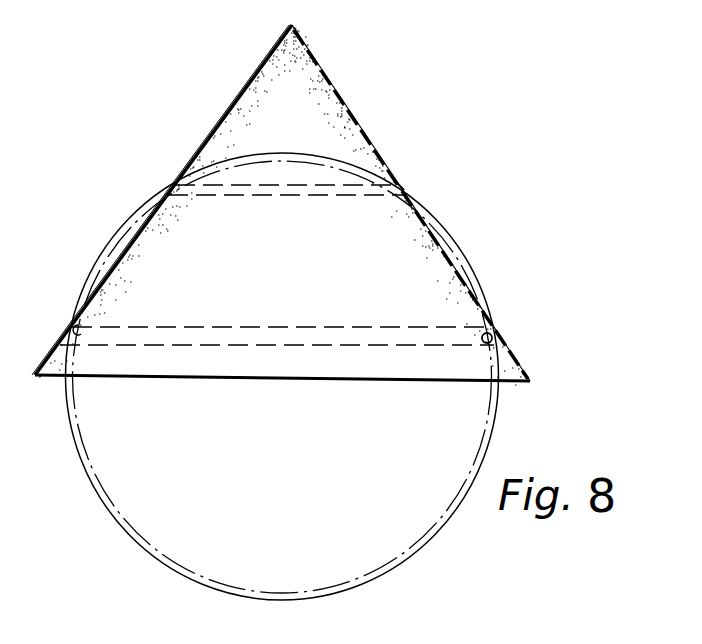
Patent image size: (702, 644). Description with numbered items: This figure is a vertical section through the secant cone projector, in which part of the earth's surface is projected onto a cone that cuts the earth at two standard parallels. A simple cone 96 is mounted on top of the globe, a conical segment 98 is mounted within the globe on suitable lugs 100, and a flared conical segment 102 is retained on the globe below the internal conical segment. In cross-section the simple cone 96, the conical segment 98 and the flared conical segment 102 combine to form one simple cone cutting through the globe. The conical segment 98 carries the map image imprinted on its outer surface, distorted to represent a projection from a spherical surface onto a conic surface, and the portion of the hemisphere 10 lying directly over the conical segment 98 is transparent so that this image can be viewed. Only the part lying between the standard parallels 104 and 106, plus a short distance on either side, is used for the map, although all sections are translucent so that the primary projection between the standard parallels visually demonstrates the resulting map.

The hemisphere 10 is at (120, 232).
The simple cone 96 is at (355, 118).
The conical segment 98 is at (448, 255).
The lugs 100 is at (492, 337).
The flared conical segment 102 is at (513, 366).
The standard parallel 104 is at (402, 182).
The standard parallel 106 is at (462, 335).